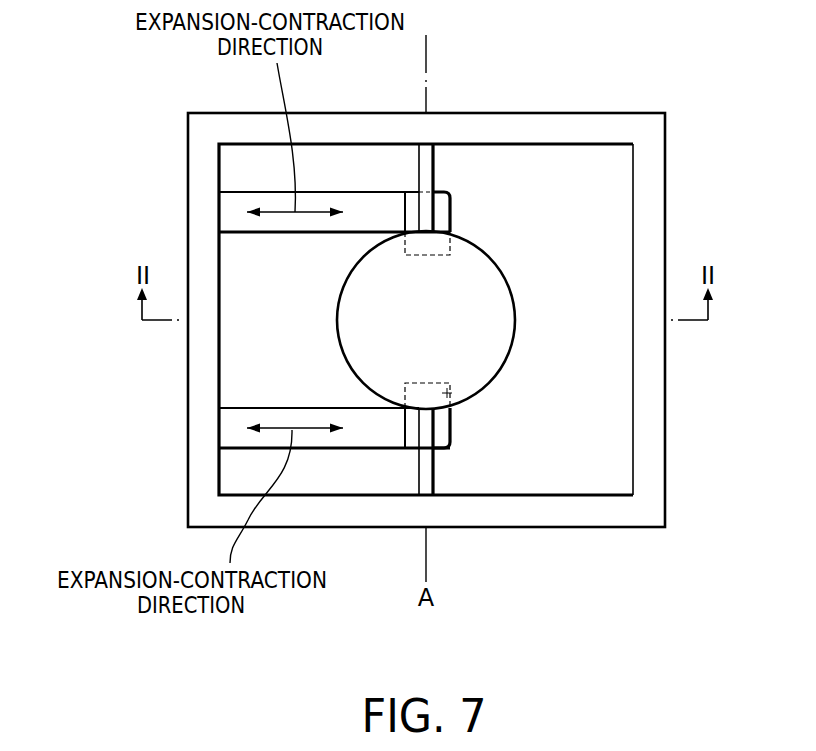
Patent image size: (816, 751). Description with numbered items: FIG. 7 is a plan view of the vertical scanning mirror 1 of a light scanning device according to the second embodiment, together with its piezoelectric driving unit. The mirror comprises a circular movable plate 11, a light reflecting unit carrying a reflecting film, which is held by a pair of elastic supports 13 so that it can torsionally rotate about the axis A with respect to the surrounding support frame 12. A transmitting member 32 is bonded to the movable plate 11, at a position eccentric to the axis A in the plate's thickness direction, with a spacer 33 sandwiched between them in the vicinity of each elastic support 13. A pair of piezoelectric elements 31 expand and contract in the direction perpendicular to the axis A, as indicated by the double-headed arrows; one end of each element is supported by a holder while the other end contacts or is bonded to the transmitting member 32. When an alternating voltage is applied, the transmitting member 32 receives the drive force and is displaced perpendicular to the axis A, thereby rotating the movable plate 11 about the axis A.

The vertical scanning mirror 1 is at (702, 88).
The movable plate 11 is at (478, 268).
The support frame 12 is at (647, 177).
The elastic support 13 is at (422, 170).
The piezoelectric element 31 is at (228, 212).
The transmitting member 32 is at (443, 207).
The spacer 33 is at (413, 243).